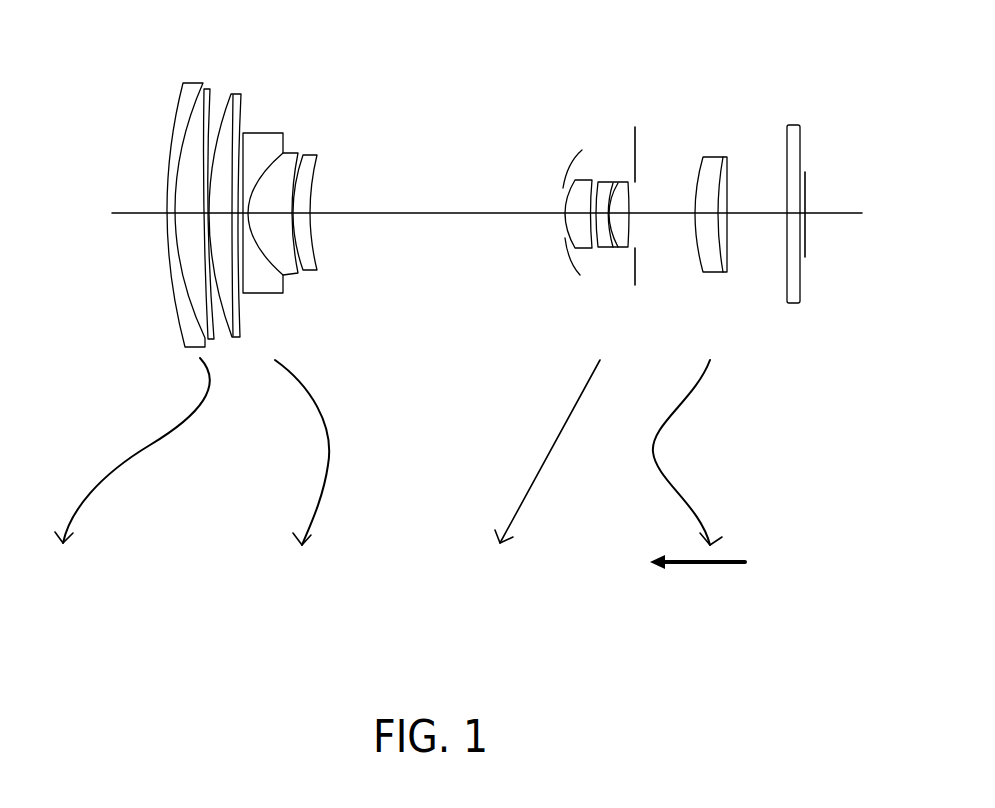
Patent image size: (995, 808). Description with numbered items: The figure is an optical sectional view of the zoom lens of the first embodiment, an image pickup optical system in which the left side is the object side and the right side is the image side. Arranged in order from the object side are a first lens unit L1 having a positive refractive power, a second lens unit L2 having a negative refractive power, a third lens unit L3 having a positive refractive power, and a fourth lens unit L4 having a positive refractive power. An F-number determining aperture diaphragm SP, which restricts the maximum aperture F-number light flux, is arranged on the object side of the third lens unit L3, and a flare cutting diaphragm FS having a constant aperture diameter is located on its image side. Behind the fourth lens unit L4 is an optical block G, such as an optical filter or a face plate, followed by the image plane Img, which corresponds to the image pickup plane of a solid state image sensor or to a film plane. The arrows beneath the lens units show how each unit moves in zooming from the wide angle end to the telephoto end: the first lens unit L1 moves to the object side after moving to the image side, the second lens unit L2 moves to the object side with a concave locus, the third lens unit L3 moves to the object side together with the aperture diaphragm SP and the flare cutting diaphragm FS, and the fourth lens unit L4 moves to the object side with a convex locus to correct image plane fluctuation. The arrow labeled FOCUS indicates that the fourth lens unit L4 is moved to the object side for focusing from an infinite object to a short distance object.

The first lens unit L1 is at (168, 68).
The second lens unit L2 is at (242, 68).
The third lens unit L3 is at (635, 70).
The fourth lens unit L4 is at (695, 70).
The optical block G is at (787, 70).
The aperture diaphragm SP is at (581, 236).
The flare cutting diaphragm FS is at (640, 225).
The image plane Img is at (844, 214).
The focusing direction arrow FOCUS is at (708, 582).